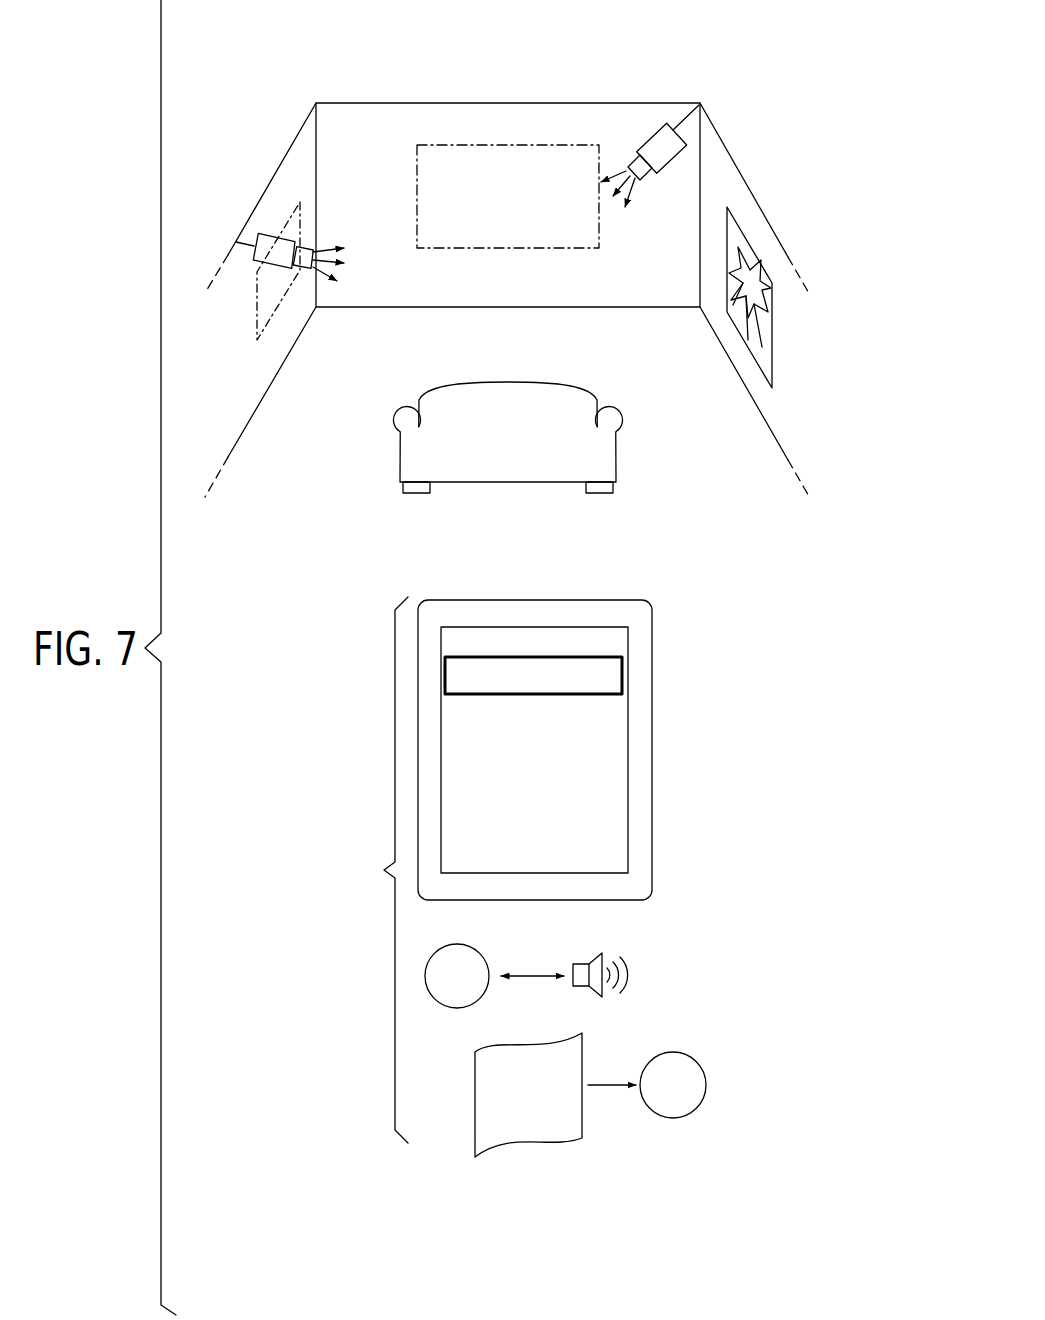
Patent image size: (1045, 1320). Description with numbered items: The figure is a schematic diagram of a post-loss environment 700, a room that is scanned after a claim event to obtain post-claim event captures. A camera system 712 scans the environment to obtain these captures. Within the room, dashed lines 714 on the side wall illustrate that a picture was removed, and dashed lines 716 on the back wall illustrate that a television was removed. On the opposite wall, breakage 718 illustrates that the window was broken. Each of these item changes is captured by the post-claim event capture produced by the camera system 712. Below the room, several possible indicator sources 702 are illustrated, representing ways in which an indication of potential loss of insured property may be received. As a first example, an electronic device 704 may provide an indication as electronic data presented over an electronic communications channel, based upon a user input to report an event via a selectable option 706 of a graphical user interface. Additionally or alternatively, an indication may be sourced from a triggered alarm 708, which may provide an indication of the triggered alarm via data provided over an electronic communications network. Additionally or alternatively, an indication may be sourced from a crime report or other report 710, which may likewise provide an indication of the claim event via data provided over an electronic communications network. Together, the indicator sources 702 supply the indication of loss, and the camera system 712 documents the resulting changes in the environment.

The post-loss environment 700 is at (736, 112).
The indicator sources 702 is at (370, 870).
The electronic device 704 is at (646, 579).
The selectable option 706 is at (578, 697).
The triggered alarm 708 is at (627, 933).
The crime report or other report 710 is at (528, 1152).
The camera system 712 is at (258, 243).
The dashed lines 714 is at (259, 307).
The dashed lines 716 is at (463, 250).
The breakage 718 is at (728, 260).